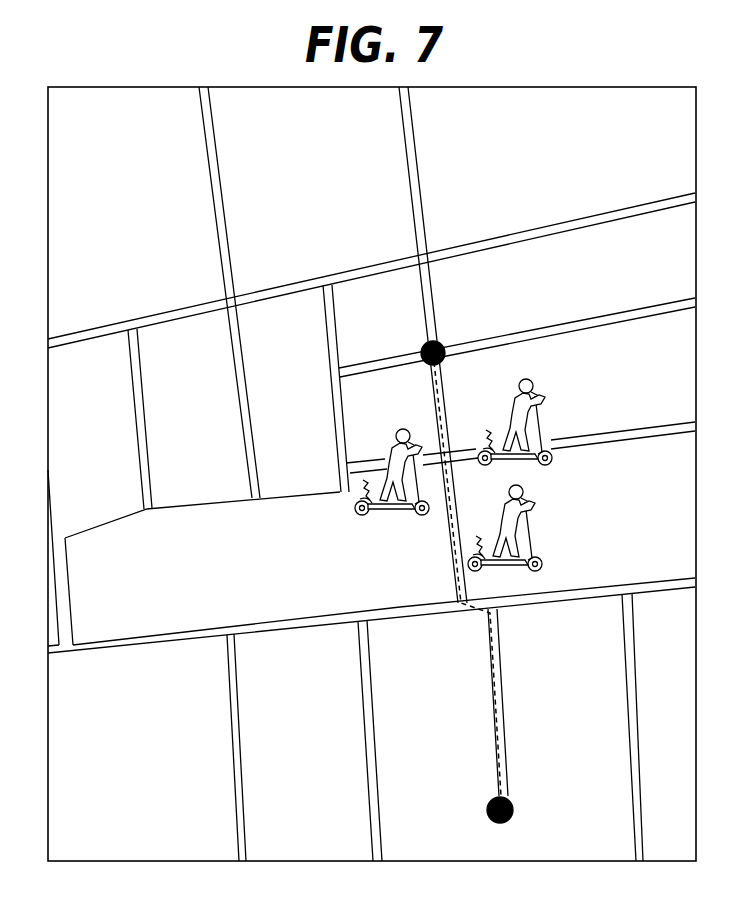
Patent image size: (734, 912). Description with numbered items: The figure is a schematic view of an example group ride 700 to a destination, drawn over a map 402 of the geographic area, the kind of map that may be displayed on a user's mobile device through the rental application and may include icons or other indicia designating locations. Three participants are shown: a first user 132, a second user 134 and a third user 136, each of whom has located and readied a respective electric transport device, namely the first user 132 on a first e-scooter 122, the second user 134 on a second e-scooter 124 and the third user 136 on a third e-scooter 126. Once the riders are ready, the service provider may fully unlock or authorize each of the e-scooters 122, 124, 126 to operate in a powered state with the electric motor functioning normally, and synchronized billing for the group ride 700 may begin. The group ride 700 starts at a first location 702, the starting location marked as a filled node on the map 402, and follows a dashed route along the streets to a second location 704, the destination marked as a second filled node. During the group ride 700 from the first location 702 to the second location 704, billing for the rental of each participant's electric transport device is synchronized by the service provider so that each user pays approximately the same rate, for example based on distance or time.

The map 402 is at (596, 87).
The group ride 700 is at (465, 611).
The first location 702 is at (444, 340).
The second location 704 is at (514, 806).
The first e-scooter 122 is at (383, 513).
The second e-scooter 124 is at (547, 427).
The third e-scooter 126 is at (540, 532).
The first user 132 is at (390, 451).
The second user 134 is at (513, 403).
The third user 136 is at (501, 508).